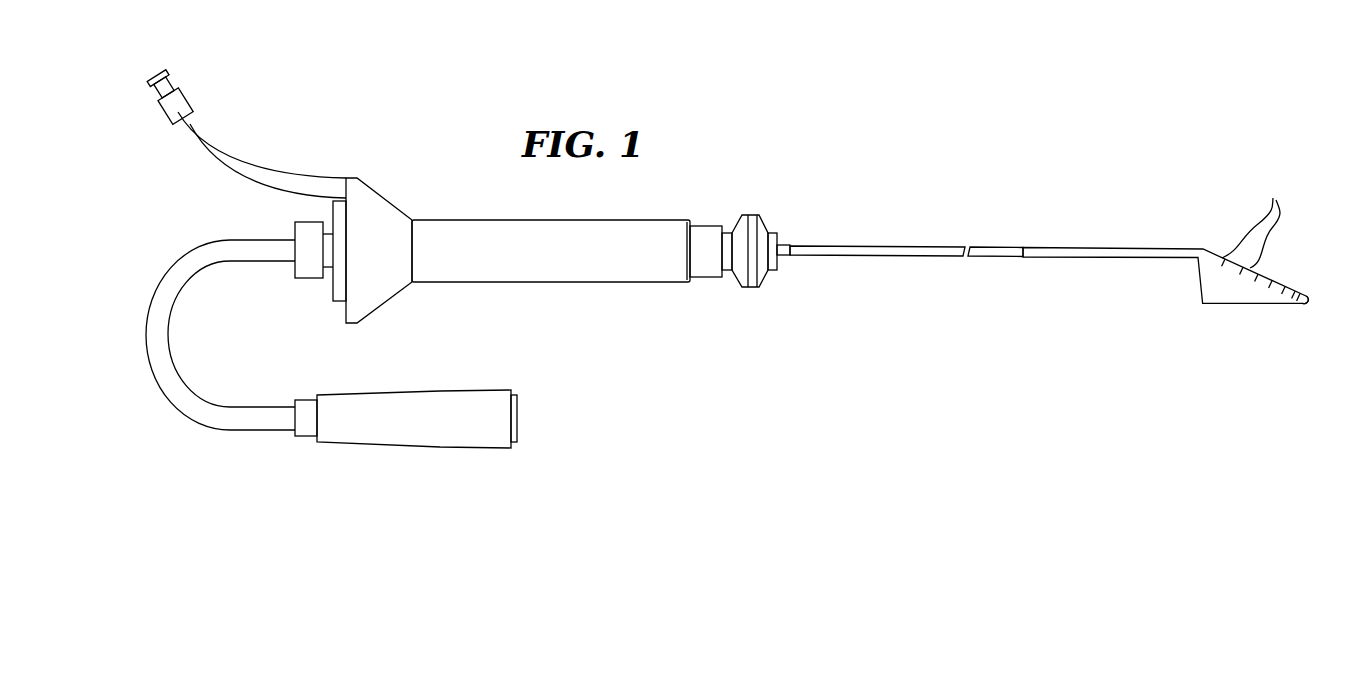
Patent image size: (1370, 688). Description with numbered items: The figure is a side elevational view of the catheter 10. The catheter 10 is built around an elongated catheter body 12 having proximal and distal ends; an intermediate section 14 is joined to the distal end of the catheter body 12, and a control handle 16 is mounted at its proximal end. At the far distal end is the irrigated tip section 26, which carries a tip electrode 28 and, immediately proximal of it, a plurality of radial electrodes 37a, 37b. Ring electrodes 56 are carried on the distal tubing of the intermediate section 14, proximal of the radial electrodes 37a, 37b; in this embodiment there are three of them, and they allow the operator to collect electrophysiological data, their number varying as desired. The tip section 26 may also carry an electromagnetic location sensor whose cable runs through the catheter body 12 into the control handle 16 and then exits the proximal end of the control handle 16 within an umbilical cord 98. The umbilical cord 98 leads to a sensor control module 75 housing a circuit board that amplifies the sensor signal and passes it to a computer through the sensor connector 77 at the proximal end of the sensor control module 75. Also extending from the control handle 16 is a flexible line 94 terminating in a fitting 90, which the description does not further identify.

The catheter 10 is at (645, 212).
The catheter body 12 is at (885, 253).
The intermediate section 14 is at (1107, 253).
The control handle 16 is at (475, 237).
The irrigated tip section 26 is at (1276, 287).
The tip electrode 28 is at (1304, 304).
The radial electrode 37a is at (1296, 287).
The radial electrode 37b is at (1292, 300).
The ring electrodes 56 is at (1258, 216).
The sensor control module 75 is at (413, 403).
The sensor connector 77 is at (516, 402).
The luer connector 90 is at (186, 100).
The fluid tubing 94 is at (213, 146).
The umbilical cord 98 is at (215, 254).